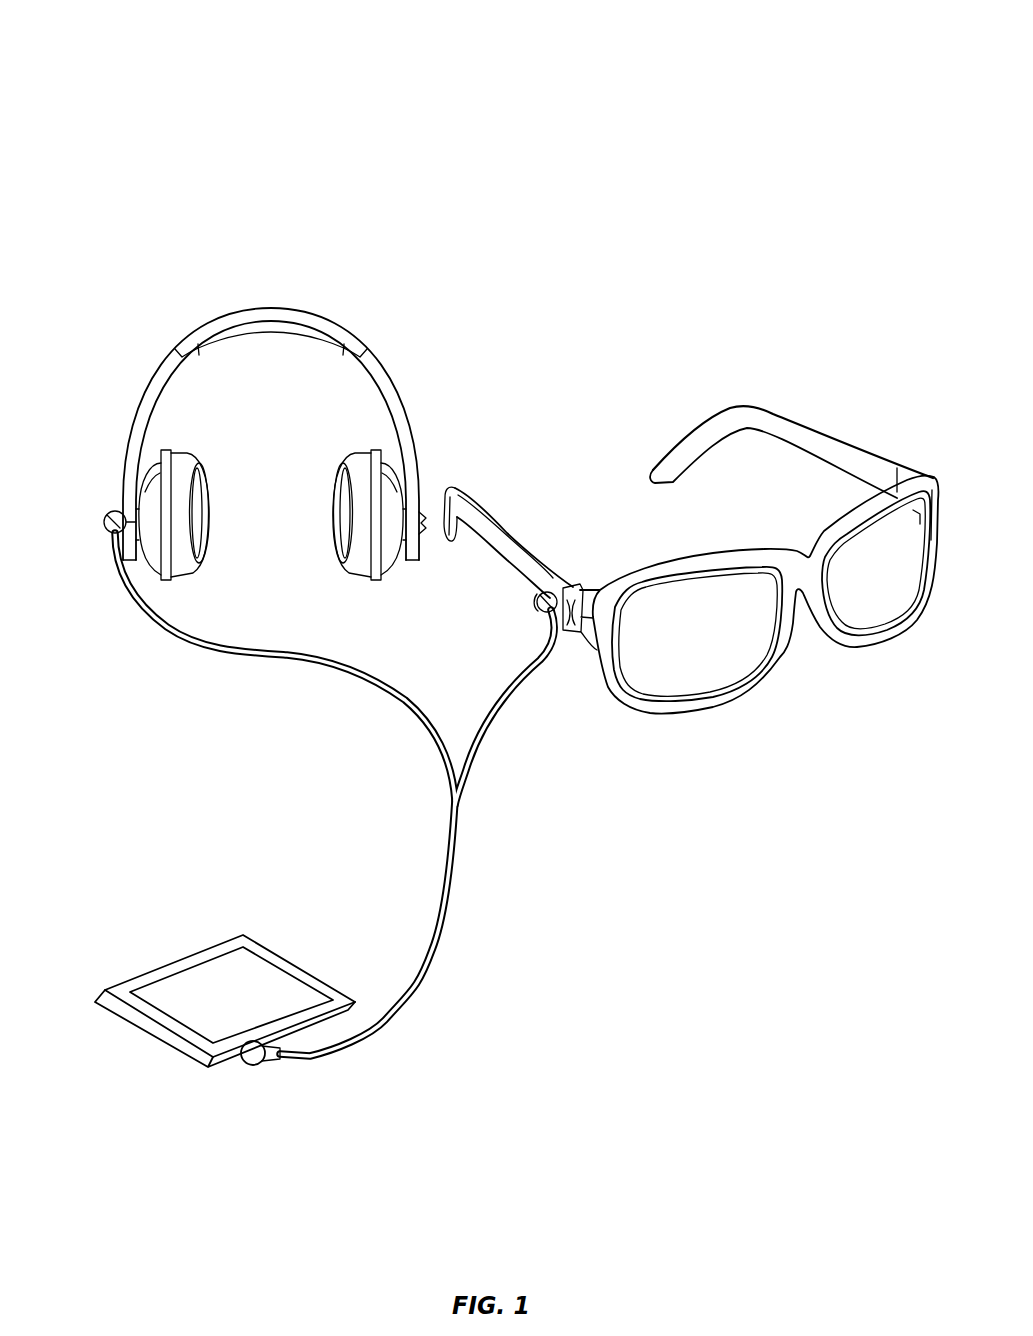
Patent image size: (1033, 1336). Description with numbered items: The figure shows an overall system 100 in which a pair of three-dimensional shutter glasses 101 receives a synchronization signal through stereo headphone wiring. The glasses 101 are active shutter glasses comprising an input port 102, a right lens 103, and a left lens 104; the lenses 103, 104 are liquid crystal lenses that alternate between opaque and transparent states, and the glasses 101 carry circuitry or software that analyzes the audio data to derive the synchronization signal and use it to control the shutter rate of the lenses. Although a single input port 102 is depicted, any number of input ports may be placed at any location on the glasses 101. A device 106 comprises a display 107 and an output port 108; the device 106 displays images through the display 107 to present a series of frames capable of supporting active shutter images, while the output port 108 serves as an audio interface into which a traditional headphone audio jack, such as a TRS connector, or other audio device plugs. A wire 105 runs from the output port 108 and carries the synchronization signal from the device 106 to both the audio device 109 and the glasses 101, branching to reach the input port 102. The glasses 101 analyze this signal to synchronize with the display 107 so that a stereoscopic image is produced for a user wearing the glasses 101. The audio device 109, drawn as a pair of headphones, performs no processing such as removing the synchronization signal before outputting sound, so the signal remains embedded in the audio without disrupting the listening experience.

The overall system 100 is at (233, 110).
The 3D shutter glasses 101 is at (747, 696).
The input port 102 is at (547, 592).
The right lens 103 is at (709, 643).
The left lens 104 is at (894, 584).
The wire 105 is at (440, 837).
The device 106 is at (147, 973).
The display 107 is at (246, 1007).
The output port 108 is at (272, 1058).
The audio device 109 is at (367, 380).